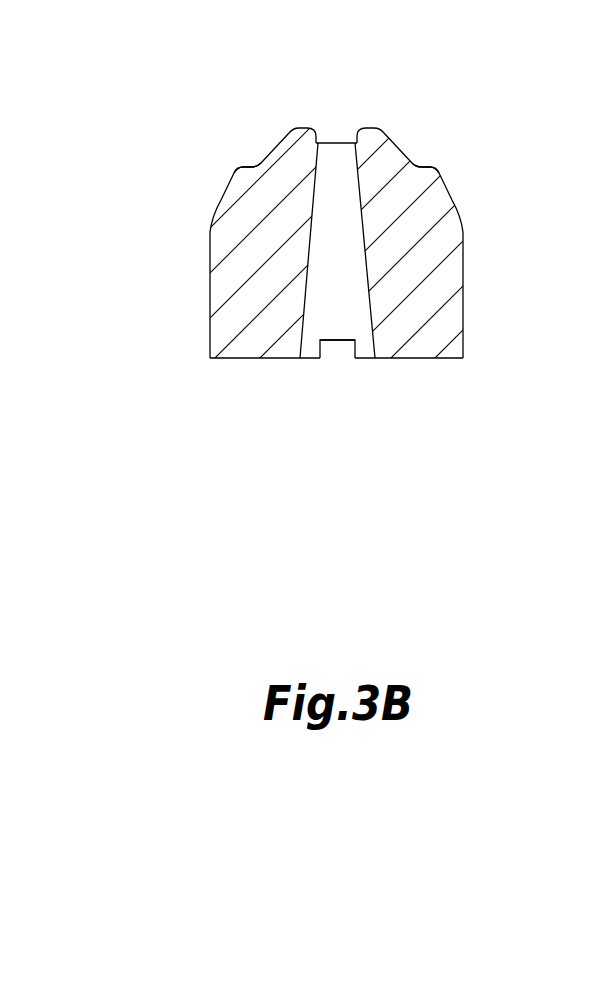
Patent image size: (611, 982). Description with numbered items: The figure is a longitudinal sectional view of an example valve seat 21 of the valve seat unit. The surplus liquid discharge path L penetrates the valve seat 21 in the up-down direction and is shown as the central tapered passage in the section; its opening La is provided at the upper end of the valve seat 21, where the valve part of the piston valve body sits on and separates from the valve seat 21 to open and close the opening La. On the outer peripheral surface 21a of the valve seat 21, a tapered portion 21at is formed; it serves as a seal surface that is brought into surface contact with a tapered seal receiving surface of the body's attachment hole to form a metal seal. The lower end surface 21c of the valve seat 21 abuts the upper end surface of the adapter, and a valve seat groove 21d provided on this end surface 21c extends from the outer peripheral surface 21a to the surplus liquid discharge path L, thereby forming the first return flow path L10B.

The valve seat 21 is at (345, 273).
The outer peripheral surface 21a is at (464, 260).
The tapered portion 21at is at (437, 178).
The lower end surface 21c is at (383, 358).
The valve seat groove 21d is at (338, 340).
The first return flow path L10B is at (338, 340).
The surplus liquid discharge path L is at (318, 279).
The opening La is at (318, 128).